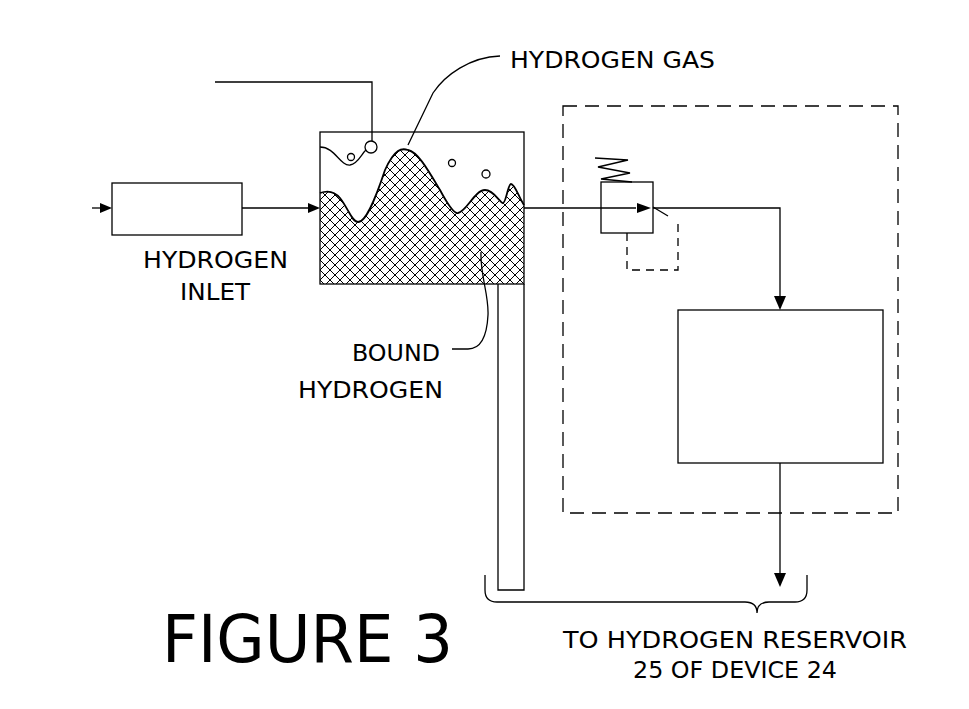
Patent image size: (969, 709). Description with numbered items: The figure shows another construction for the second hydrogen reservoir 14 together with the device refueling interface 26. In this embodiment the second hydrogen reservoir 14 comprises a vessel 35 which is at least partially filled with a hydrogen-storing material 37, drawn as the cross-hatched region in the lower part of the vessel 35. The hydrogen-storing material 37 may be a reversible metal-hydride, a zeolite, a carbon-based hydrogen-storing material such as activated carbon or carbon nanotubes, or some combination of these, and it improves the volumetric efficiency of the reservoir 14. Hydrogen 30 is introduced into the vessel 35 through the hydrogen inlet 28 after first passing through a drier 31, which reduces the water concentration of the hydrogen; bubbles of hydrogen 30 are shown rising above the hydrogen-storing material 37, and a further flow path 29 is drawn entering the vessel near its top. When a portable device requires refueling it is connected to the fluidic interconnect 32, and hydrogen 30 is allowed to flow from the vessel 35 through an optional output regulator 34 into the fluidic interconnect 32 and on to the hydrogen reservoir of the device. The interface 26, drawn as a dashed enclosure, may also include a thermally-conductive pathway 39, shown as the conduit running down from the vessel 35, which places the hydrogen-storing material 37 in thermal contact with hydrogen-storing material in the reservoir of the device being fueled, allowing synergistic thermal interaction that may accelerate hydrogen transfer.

The second hydrogen reservoir 14 is at (429, 66).
The device refueling interface 26 is at (732, 105).
The hydrogen inlet 28 is at (260, 208).
The hydrogen gas path 29 is at (320, 147).
The hydrogen 30 is at (428, 159).
The drier 31 is at (178, 183).
The fluidic interconnect 32 is at (678, 387).
The output regulator 34 is at (653, 182).
The vessel 35 is at (479, 132).
The hydrogen-storing material 37 is at (430, 275).
The thermally-conductive pathway 39 is at (498, 488).